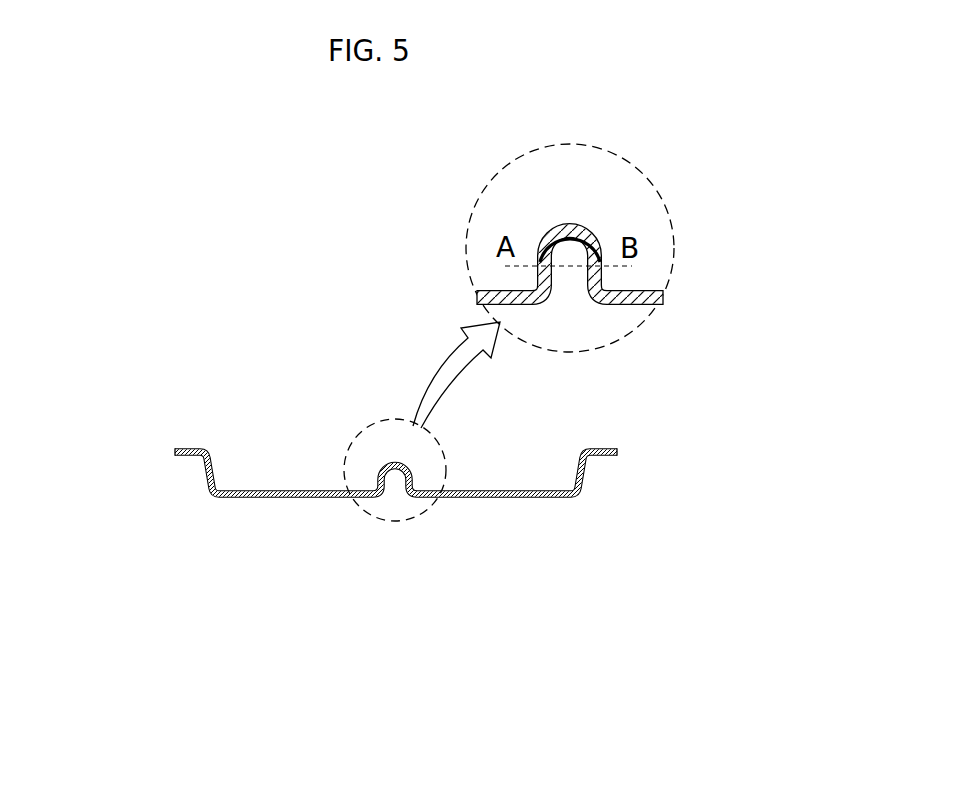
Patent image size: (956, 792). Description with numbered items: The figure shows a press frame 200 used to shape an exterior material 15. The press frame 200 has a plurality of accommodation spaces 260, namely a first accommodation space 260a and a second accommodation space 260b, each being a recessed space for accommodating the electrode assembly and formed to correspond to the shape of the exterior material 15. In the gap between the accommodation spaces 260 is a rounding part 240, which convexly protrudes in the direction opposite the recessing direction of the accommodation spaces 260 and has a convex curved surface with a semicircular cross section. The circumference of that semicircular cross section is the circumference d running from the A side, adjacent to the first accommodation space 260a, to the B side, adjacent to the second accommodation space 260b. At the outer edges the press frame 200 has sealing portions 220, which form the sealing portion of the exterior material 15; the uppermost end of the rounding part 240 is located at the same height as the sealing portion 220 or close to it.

The press frame 200 is at (150, 460).
The sealing portion 220 is at (190, 482).
The rounding part 240 is at (393, 486).
The accommodation spaces 260 is at (528, 640).
The first accommodation space 260a is at (304, 480).
The second accommodation space 260b is at (500, 480).
The exterior material 15 is at (360, 427).
The circumference of the semicircle d is at (571, 222).